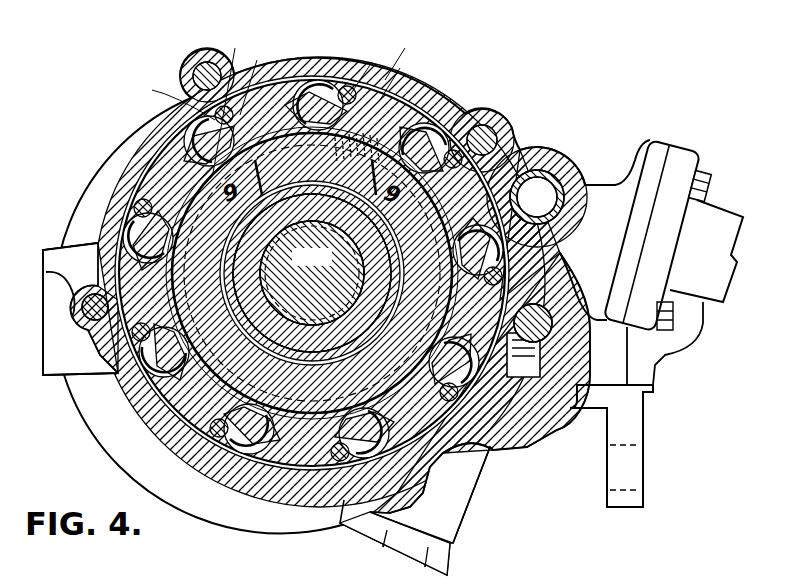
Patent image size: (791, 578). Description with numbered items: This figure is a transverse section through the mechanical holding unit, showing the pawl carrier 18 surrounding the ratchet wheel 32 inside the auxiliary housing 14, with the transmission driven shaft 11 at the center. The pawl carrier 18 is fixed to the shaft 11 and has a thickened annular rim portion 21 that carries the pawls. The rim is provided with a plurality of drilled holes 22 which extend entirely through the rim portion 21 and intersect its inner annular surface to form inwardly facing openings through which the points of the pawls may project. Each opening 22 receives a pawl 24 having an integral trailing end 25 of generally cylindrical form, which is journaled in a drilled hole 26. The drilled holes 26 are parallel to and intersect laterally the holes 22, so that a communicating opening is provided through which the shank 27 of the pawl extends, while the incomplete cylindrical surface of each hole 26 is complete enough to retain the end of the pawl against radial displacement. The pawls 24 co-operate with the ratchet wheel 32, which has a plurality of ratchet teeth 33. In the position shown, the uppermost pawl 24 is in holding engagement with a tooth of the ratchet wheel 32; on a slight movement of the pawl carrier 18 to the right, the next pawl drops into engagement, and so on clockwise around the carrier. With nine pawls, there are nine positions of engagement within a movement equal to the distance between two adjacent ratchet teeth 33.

The driven shaft 11 is at (318, 263).
The auxiliary housing 14 is at (148, 417).
The pawl carrier 18 is at (420, 97).
The annular rim portion 21 is at (402, 88).
The drilled holes 22 is at (332, 98).
The pawl 24 is at (303, 137).
The trailing end 25 is at (312, 101).
The drilled hole 26 is at (326, 72).
The shank 27 is at (251, 82).
The ratchet wheel 32 is at (437, 110).
The ratchet teeth 33 is at (468, 120).